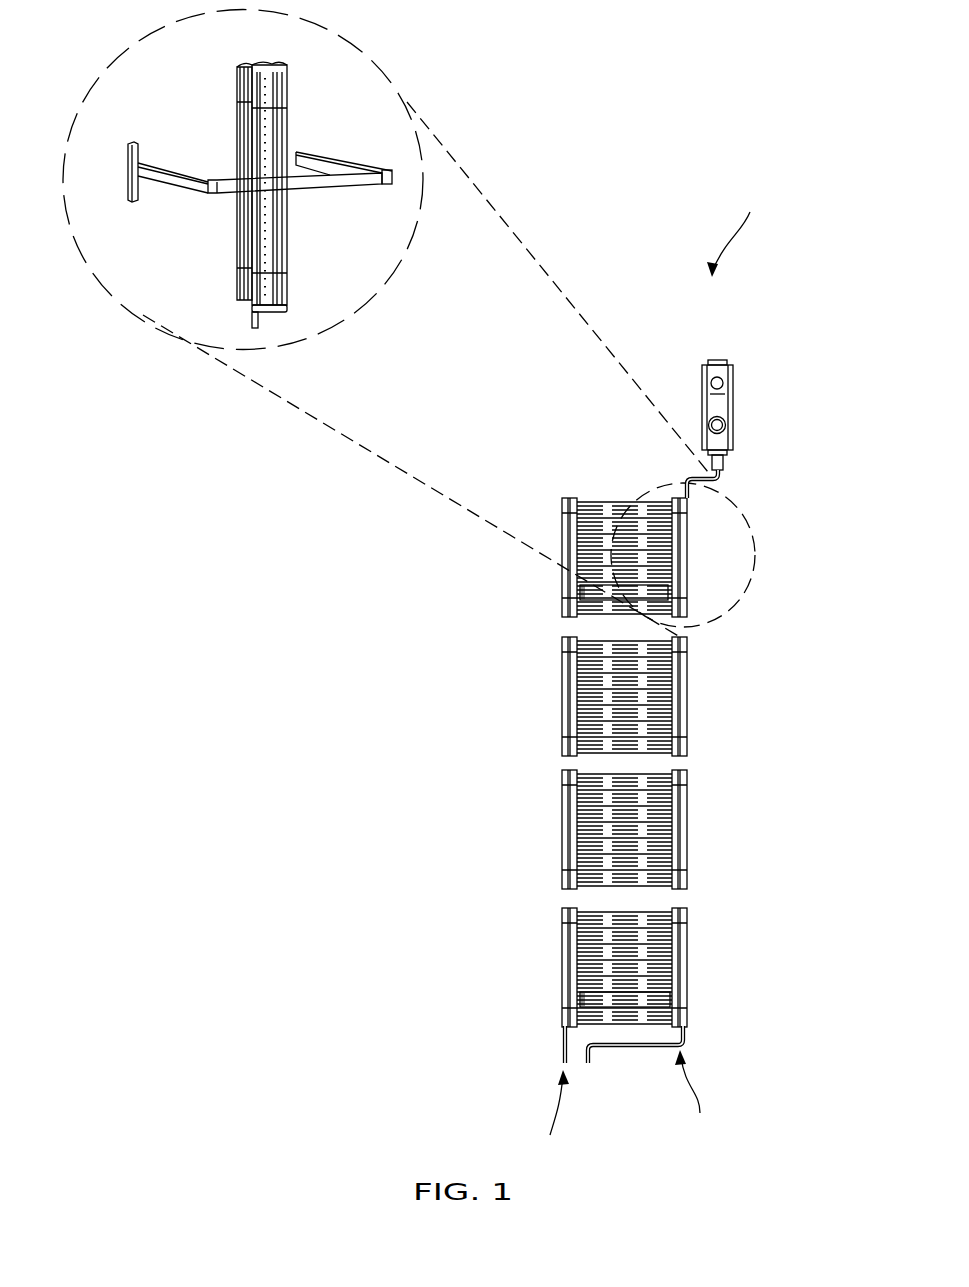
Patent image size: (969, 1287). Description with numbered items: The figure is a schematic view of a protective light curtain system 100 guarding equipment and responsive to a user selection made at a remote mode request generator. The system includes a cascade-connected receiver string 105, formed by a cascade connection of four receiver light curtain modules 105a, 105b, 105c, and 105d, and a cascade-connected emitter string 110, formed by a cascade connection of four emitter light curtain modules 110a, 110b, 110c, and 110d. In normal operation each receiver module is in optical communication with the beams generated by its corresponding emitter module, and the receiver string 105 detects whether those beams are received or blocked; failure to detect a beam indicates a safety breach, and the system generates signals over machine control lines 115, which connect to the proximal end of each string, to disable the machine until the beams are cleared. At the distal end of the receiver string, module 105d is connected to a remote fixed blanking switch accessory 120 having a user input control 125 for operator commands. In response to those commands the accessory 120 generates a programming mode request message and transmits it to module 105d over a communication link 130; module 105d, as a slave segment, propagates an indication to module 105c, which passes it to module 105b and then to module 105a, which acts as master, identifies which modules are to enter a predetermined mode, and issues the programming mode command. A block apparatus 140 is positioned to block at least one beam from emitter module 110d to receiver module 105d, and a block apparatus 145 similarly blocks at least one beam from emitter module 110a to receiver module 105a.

The protective light curtain system 100 is at (737, 229).
The cascade-connected receiver (RX) string 105 is at (651, 1084).
The RX light curtain module 105a is at (686, 953).
The RX light curtain module 105b is at (688, 826).
The RX light curtain module 105c is at (688, 693).
The RX light curtain module 105d is at (283, 128).
The cascade-connected emitter (TX) string 110 is at (550, 1094).
The TX light curtain module 110a is at (561, 967).
The TX light curtain module 110b is at (561, 830).
The TX light curtain module 110c is at (561, 697).
The TX light curtain module 110d is at (560, 557).
The machine control lines 115 is at (586, 1070).
The remote fixed blanking (RFB) switch accessory 120 is at (733, 366).
The user input control 125 is at (726, 426).
The communication link 130 is at (720, 473).
The block apparatus 140 is at (323, 188).
The block apparatus 145 is at (663, 998).